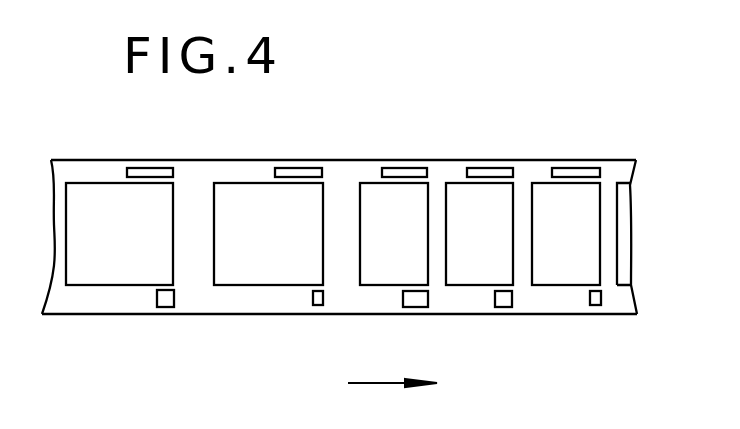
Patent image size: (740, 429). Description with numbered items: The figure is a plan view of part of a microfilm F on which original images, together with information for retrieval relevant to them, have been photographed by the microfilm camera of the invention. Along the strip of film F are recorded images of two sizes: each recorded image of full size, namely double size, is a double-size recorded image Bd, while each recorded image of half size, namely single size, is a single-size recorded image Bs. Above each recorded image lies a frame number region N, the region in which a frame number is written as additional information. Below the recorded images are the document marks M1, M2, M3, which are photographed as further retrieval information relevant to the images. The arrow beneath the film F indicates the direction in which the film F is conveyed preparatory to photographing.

The microfilm F is at (344, 159).
The frame number region N is at (363, 150).
The double-size recorded image Bd is at (127, 249).
The single-size recorded image Bs is at (379, 249).
The document mark M1 is at (457, 321).
The document mark M2 is at (334, 321).
The document mark M3 is at (415, 307).